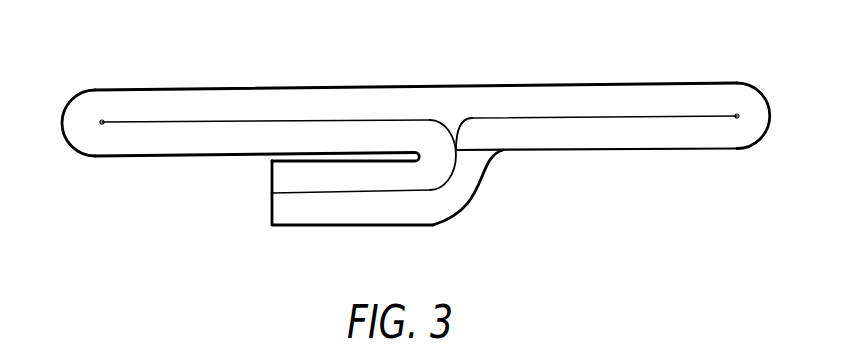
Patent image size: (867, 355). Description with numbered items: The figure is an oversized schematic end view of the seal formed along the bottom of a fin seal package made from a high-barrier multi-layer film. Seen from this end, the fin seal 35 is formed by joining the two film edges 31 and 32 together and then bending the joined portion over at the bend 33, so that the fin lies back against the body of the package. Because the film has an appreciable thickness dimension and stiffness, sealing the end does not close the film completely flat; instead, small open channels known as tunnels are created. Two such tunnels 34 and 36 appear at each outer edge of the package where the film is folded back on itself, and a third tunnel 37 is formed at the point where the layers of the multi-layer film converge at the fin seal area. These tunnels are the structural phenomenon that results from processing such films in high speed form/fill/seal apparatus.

The edge 31 is at (271, 208).
The edge 32 is at (271, 173).
The bend 33 is at (488, 150).
The tunnel 34 is at (103, 120).
The fin seal 35 is at (437, 225).
The tunnel 36 is at (736, 115).
The tunnel 37 is at (457, 128).